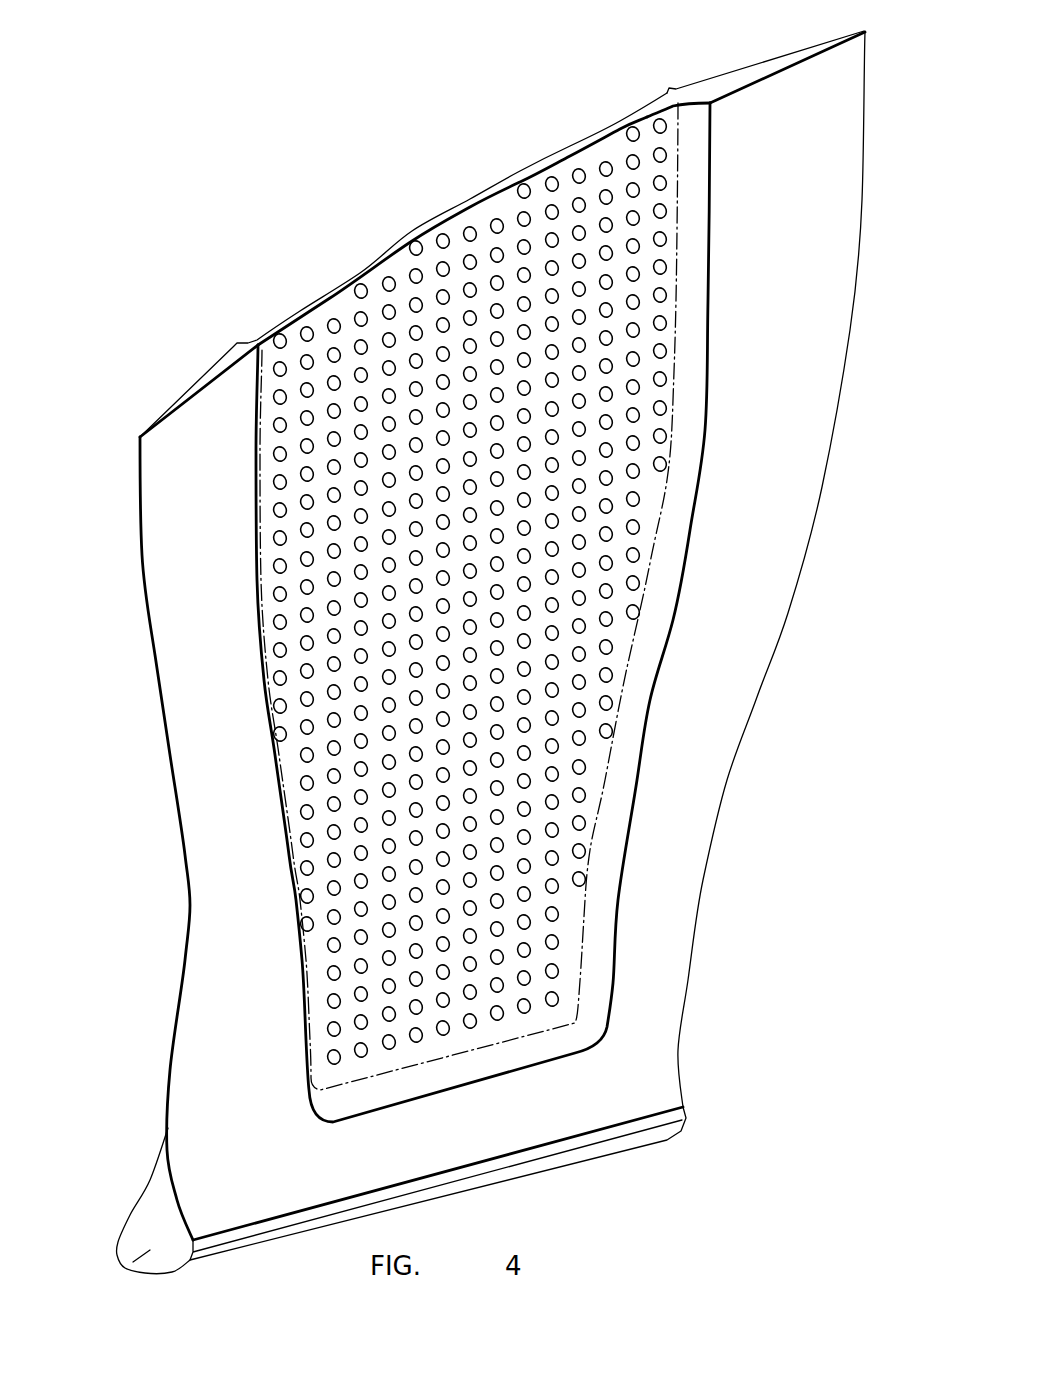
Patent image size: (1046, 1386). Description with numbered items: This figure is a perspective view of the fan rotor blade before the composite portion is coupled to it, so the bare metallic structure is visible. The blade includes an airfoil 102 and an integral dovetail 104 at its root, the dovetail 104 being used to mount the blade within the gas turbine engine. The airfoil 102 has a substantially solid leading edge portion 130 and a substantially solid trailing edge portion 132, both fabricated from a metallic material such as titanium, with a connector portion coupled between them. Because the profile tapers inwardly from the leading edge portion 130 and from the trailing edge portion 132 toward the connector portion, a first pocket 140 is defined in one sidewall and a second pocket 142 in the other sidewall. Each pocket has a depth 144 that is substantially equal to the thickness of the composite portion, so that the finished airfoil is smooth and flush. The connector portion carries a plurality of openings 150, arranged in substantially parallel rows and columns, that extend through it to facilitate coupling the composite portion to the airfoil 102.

The airfoil 102 is at (217, 938).
The integral dovetail 104 is at (118, 1262).
The leading edge portion 130 is at (748, 72).
The trailing edge portion 132 is at (207, 378).
The first pocket 140 is at (654, 78).
The second pocket 142 is at (692, 164).
The pocket depth 144 is at (592, 1020).
The openings 150 is at (420, 252).